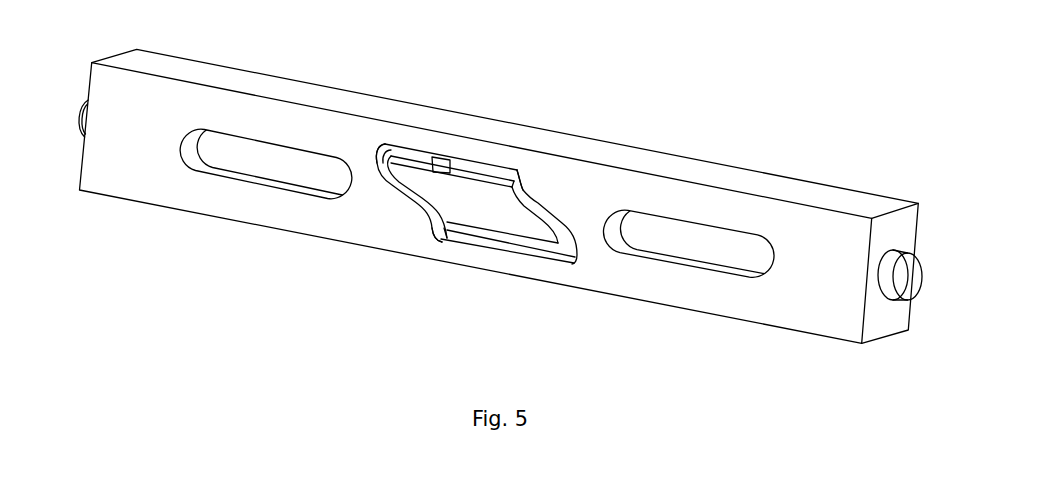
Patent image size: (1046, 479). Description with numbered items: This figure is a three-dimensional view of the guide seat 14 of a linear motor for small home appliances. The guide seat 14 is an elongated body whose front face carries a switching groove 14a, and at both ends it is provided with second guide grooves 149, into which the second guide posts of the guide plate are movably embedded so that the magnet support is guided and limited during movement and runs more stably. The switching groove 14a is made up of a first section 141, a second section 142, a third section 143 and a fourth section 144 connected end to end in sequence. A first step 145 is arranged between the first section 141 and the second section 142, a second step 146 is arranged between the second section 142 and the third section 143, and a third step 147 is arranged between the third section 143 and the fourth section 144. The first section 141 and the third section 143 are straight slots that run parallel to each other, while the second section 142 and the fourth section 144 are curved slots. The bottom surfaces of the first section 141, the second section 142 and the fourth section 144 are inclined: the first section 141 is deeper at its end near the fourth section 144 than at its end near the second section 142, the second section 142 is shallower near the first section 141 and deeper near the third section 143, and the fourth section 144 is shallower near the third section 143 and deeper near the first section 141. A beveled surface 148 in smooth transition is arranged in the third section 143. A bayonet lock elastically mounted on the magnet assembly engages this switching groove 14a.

The guide seat 14 is at (185, 67).
The switching groove 14a is at (488, 205).
The first section 141 is at (498, 240).
The second section 142 is at (407, 197).
The third section 143 is at (462, 165).
The fourth section 144 is at (545, 207).
The first step 145 is at (440, 237).
The second step 146 is at (397, 150).
The third step 147 is at (517, 170).
The bevel surface in smooth transition 148 is at (440, 157).
The second guide groove 149 is at (715, 247).